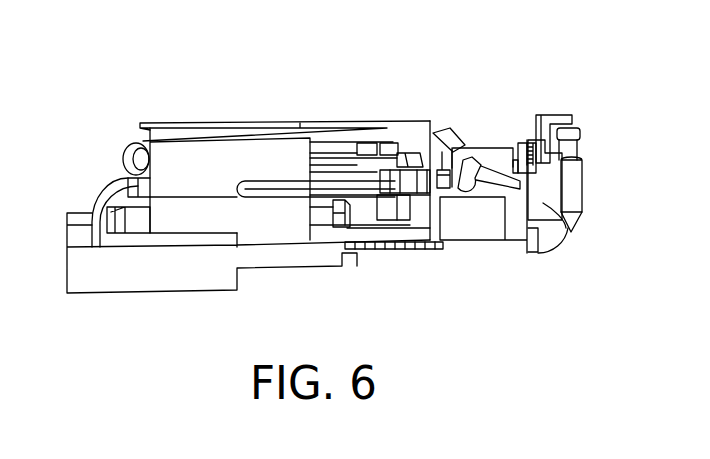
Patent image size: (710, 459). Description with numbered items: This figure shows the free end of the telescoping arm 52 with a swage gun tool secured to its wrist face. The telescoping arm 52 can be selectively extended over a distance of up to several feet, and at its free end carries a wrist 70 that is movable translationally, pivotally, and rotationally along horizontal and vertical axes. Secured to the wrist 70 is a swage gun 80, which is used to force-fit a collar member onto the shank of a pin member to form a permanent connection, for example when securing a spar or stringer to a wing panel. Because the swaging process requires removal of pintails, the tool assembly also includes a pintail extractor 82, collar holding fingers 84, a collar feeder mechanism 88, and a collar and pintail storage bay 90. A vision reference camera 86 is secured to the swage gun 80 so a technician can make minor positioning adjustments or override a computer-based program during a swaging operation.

The telescoping arm 52 is at (171, 112).
The collar feeder mechanism 88 is at (413, 130).
The collar and pintail storage bay 90 is at (130, 147).
The wrist 70 is at (527, 113).
The collar holding fingers 84 is at (557, 117).
The swage gun 80 is at (600, 185).
The vision reference camera 86 is at (568, 233).
The pintail extractor 82 is at (531, 256).